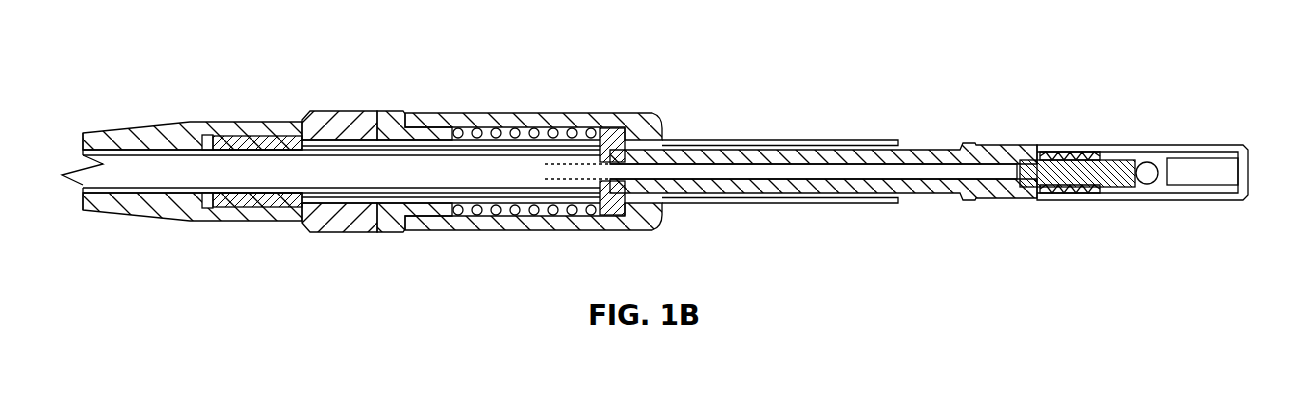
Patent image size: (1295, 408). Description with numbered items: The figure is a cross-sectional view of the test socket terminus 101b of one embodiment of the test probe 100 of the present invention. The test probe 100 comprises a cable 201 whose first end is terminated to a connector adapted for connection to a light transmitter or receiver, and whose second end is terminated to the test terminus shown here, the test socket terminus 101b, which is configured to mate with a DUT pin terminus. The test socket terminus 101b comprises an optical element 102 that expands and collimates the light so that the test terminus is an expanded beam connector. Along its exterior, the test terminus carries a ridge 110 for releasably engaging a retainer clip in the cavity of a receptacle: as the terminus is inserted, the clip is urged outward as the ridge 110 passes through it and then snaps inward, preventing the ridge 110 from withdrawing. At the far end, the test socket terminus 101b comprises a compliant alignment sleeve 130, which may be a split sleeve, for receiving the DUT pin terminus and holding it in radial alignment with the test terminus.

The test probe 100 is at (688, 74).
The cable 201 is at (162, 165).
The test socket terminus 101b is at (843, 140).
The ridge 110 is at (973, 143).
The optical element 102 is at (1152, 160).
The compliant alignment sleeve 130 is at (1227, 145).